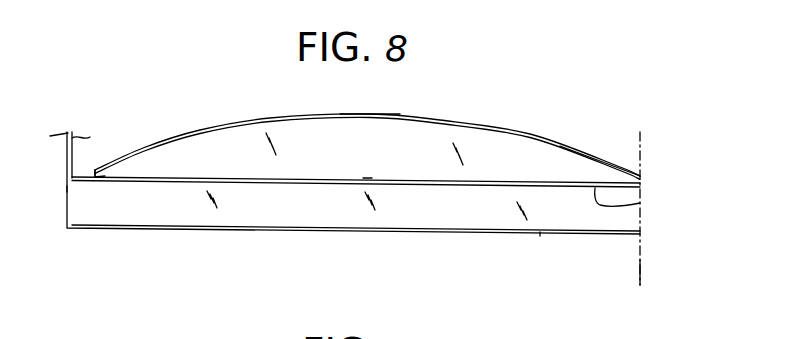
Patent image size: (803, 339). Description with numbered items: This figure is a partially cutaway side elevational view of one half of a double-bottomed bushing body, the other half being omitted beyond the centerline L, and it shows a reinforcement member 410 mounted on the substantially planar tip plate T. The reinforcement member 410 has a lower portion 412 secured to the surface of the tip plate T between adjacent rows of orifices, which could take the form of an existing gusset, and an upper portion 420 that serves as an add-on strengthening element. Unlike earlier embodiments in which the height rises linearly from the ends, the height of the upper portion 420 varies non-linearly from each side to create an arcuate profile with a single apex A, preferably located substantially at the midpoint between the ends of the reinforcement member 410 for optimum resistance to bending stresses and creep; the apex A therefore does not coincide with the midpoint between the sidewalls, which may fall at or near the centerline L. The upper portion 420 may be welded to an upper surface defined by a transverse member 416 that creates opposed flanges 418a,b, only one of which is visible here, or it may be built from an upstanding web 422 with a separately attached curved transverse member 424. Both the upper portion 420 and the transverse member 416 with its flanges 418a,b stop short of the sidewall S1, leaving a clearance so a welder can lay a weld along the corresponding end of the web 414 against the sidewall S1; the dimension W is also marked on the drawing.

The reinforcement member 410 is at (558, 108).
The lower portion 412 is at (283, 201).
The web 414 is at (332, 203).
The transverse member 416 is at (537, 176).
The flanges 418a,b is at (640, 203).
The upper portion 420 is at (211, 158).
The upstanding portion or web 422 is at (150, 168).
The curved transverse member 424 is at (227, 124).
The apex A is at (370, 116).
The width W is at (363, 178).
The tip plate T is at (540, 235).
The sidewall S1 is at (67, 189).
The centerline L is at (645, 273).